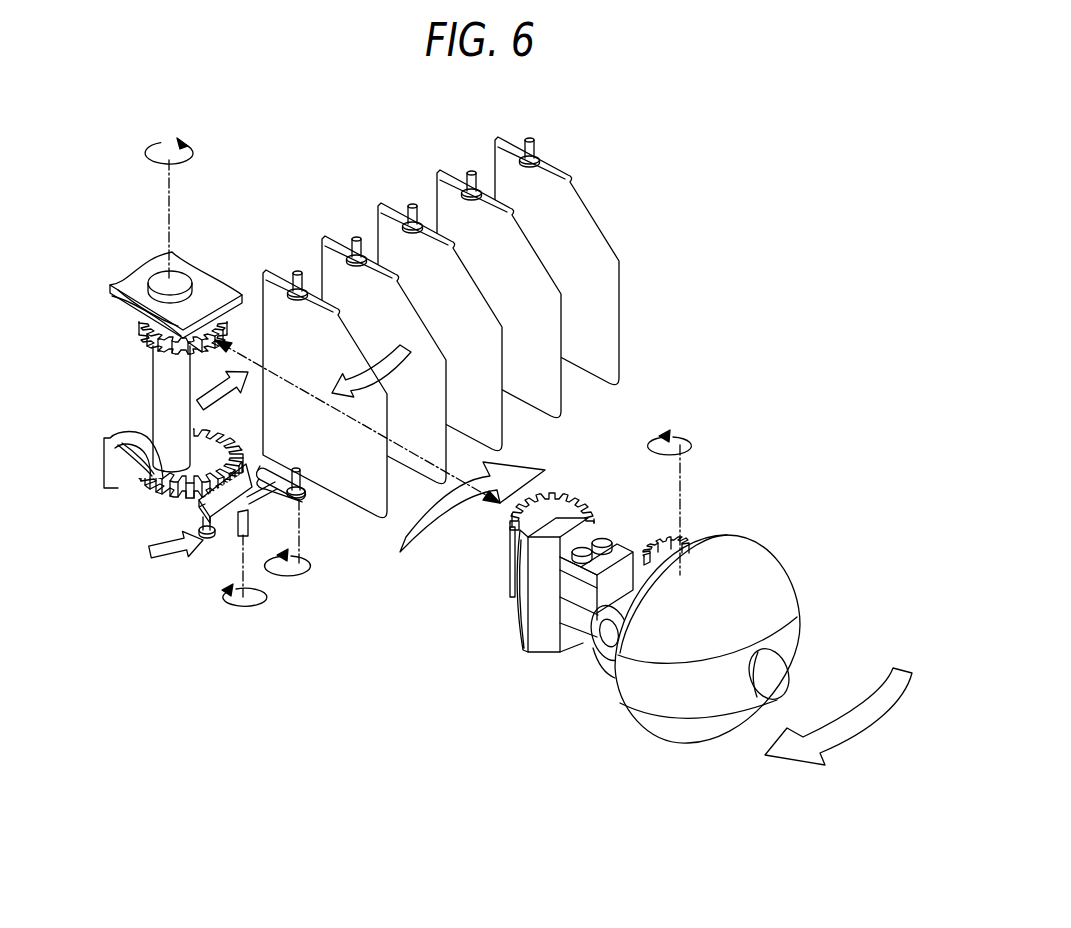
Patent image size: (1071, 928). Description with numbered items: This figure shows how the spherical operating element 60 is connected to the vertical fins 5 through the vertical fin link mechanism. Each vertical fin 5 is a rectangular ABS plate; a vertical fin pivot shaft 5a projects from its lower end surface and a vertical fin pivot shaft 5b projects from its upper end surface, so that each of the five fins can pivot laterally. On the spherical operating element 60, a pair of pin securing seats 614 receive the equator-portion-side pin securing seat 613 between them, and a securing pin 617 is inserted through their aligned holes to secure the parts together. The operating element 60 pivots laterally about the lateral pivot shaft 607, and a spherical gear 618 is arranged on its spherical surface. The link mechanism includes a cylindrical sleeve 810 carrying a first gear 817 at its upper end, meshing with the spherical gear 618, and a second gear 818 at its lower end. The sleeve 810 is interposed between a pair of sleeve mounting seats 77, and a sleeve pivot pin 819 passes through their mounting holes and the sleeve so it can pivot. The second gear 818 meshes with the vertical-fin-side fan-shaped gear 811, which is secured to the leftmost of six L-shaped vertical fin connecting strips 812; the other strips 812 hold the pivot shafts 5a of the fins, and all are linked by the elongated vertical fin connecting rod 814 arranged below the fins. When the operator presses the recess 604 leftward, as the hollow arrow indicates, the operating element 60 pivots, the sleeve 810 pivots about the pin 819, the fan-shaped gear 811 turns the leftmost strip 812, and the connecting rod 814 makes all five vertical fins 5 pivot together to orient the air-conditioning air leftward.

The vertical fin 5 is at (575, 215).
The vertical fin pivot shaft 5a is at (315, 500).
The vertical fin pivot shaft 5b is at (297, 270).
The spherical operating element 60 is at (690, 706).
The sleeve mounting seat 77 is at (113, 293).
The recess 604 is at (785, 668).
The lateral pivot shaft 607 is at (660, 552).
The equator-portion-side pin securing seat 613 is at (568, 598).
The pin securing seat 614 is at (568, 572).
The securing pin 617 is at (600, 535).
The spherical gear 618 is at (512, 537).
The sleeve 810 is at (170, 417).
The vertical-fin-side fan-shaped gear 811 is at (195, 498).
The vertical fin connecting strip 812 is at (212, 534).
The vertical fin connecting rod 814 is at (293, 534).
The first gear 817 is at (165, 338).
The second gear 818 is at (152, 478).
The sleeve pivot pin 819 is at (160, 283).